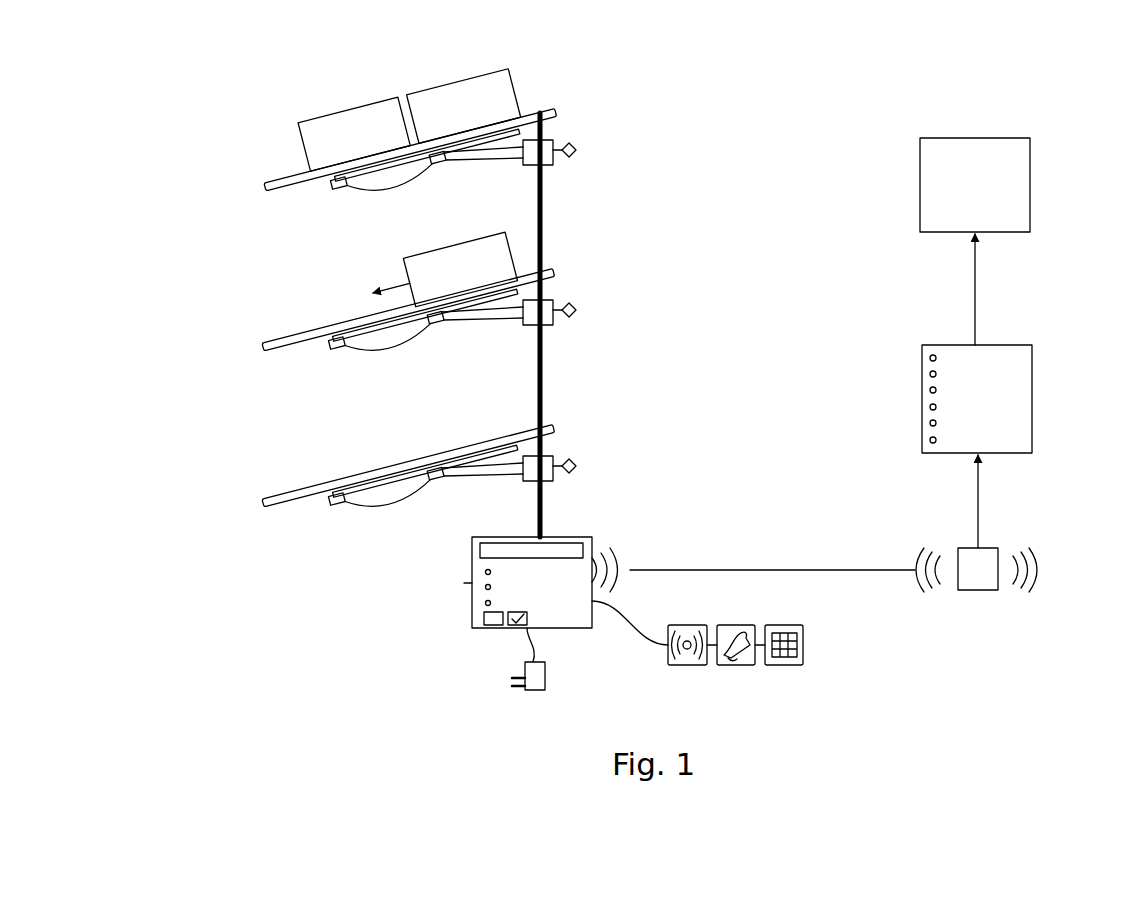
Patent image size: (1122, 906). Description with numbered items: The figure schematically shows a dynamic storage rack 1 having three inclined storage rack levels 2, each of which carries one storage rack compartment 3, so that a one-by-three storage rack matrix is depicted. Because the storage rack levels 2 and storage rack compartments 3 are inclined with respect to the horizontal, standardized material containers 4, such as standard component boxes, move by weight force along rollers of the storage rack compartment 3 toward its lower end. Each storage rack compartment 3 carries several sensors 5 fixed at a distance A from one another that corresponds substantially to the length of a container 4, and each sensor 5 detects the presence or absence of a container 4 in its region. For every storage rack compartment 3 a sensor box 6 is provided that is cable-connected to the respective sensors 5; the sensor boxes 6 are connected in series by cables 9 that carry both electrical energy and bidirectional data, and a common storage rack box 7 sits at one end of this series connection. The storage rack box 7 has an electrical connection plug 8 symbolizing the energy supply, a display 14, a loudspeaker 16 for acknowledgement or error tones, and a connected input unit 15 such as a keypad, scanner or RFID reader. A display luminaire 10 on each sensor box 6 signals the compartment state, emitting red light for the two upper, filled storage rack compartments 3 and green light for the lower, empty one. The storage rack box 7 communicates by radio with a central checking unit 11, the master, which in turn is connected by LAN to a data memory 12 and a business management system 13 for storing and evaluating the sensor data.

The storage rack 1 is at (636, 393).
The storage rack level 2 is at (404, 301).
The storage rack compartment 3 is at (303, 183).
The material container 4 is at (345, 122).
The sensor 5 is at (338, 189).
The distance A is at (390, 190).
The sensor box 6 is at (553, 143).
The storage rack box 7 is at (517, 573).
The electrical connection plug 8 is at (546, 676).
The cable 9 is at (543, 203).
The display luminaire 10 is at (578, 151).
The central checking unit 11 is at (968, 590).
The data memory 12 is at (1035, 425).
The business management system 13 is at (1030, 212).
The display 14 is at (502, 538).
The input unit 15 is at (748, 686).
The loudspeaker 16 is at (489, 590).